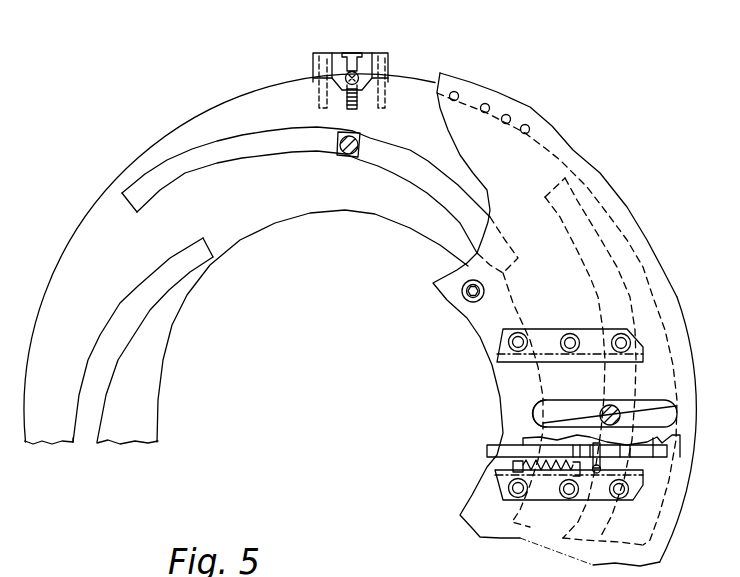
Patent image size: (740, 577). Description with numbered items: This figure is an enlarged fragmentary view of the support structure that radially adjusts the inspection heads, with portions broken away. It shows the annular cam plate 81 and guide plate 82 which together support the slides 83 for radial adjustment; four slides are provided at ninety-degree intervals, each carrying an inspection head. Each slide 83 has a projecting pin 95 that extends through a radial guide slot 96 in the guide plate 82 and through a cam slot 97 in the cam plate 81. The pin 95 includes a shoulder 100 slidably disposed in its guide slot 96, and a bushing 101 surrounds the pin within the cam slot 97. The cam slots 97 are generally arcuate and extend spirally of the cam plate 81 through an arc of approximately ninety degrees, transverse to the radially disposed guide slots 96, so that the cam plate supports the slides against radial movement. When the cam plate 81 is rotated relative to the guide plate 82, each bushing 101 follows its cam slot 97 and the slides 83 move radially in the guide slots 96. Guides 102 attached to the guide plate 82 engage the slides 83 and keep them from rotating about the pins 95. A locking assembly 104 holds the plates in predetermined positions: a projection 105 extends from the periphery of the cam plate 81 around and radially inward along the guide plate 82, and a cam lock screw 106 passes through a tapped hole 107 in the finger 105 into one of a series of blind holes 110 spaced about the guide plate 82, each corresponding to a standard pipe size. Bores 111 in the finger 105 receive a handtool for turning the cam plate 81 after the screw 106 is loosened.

The cam plate 81 is at (263, 228).
The guide plate 82 is at (566, 166).
The slide 83 is at (495, 450).
The pin 95 is at (351, 158).
The guide slot 96 is at (545, 406).
The cam slot 97 is at (143, 322).
The shoulder 100 is at (676, 407).
The bushing 101 is at (340, 154).
The guide 102 is at (503, 346).
The locking assembly 104 is at (356, 56).
The projection 105 is at (370, 73).
The cam lock screw 106 is at (348, 78).
The tapped hole 107 is at (351, 61).
The blind holes 110 is at (527, 130).
The bores 111 is at (386, 52).